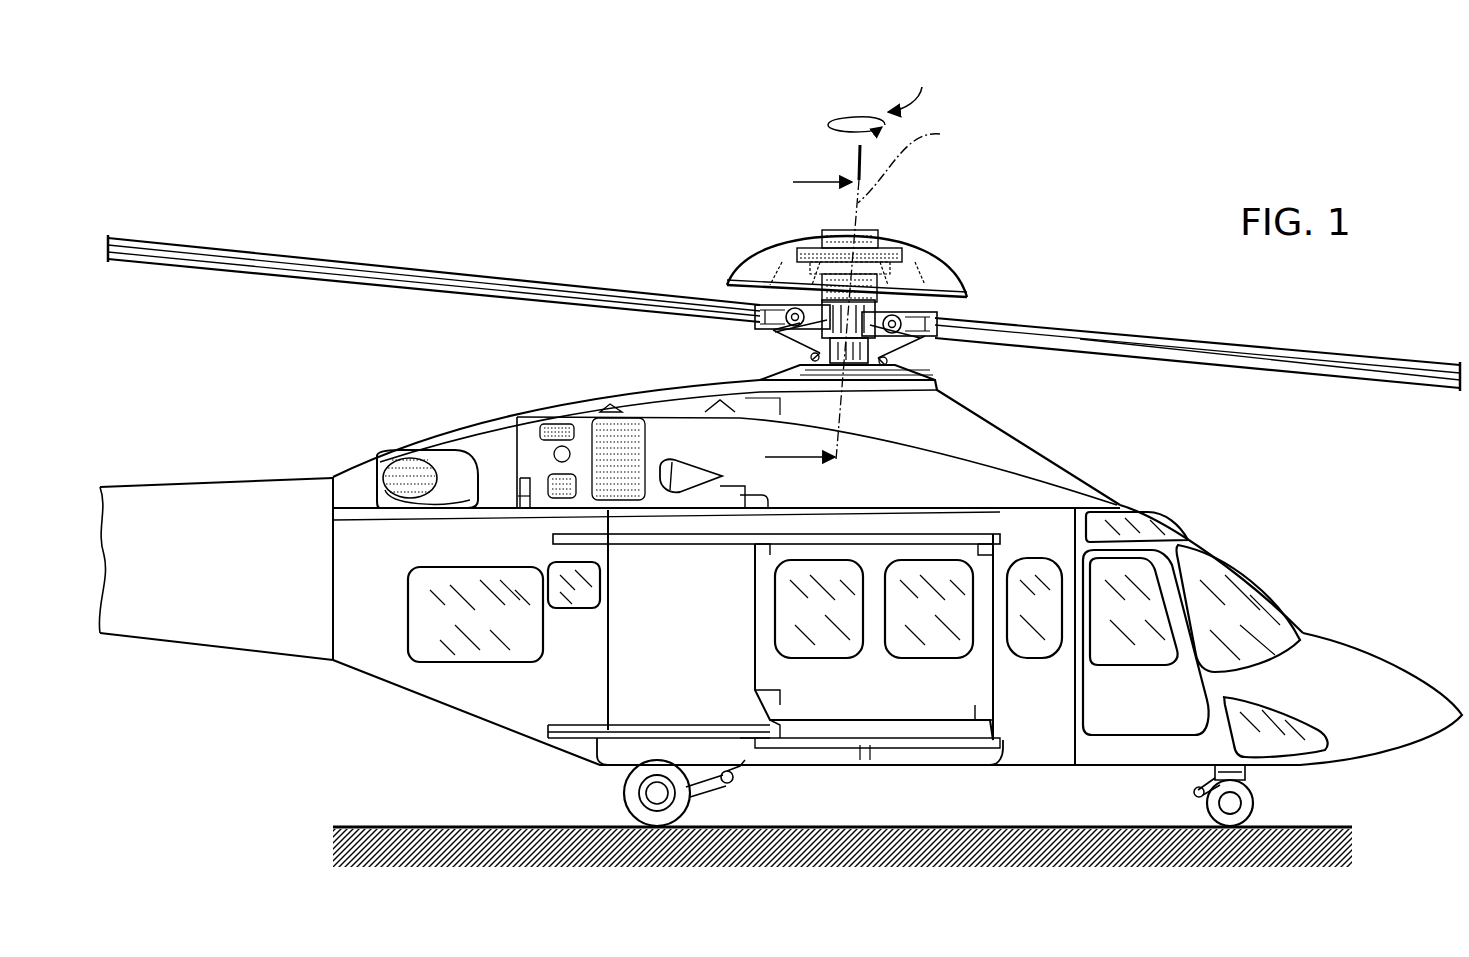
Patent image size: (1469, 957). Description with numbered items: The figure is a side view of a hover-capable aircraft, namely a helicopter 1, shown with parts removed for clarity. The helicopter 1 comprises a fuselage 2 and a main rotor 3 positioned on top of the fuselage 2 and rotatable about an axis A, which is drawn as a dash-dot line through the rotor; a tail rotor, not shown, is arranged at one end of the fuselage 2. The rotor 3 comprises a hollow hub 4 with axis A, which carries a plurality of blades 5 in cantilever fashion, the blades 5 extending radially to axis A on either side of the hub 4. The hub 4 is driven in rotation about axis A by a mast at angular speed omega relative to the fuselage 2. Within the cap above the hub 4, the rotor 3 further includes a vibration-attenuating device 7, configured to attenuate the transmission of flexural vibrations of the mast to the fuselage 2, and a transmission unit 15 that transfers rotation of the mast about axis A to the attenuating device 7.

The helicopter 1 is at (280, 182).
The fuselage 2 is at (932, 414).
The main rotor 3 is at (1035, 296).
The hollow hub 4 is at (830, 323).
The blades 5 is at (398, 292).
The vibration-attenuating device 7 is at (912, 275).
The transmission unit 15 is at (795, 270).